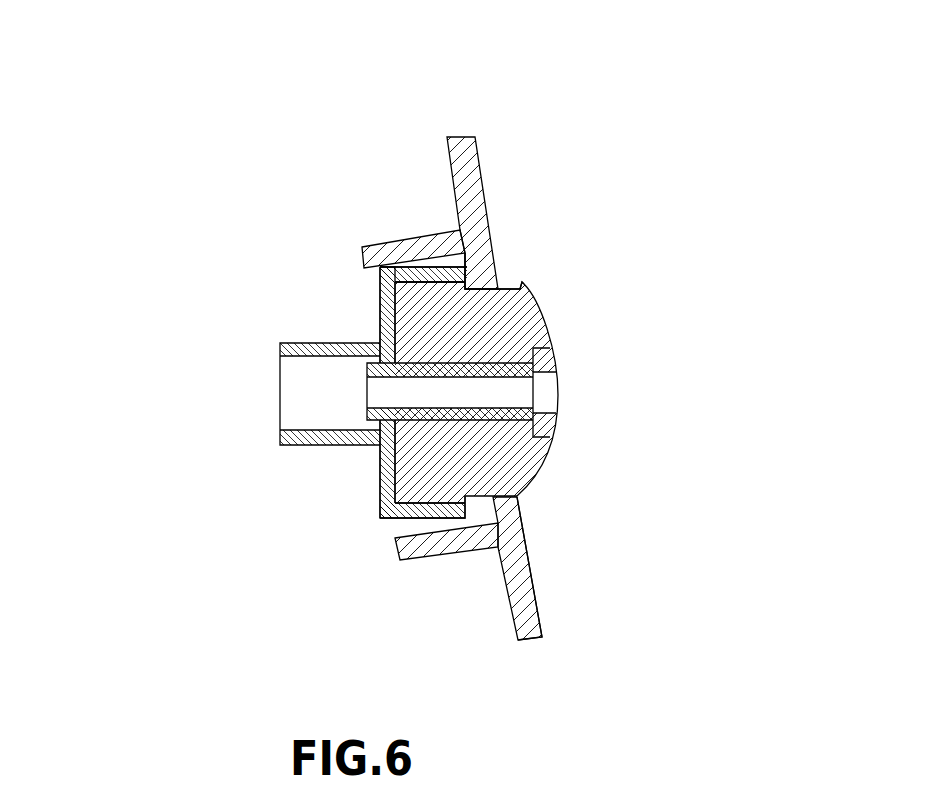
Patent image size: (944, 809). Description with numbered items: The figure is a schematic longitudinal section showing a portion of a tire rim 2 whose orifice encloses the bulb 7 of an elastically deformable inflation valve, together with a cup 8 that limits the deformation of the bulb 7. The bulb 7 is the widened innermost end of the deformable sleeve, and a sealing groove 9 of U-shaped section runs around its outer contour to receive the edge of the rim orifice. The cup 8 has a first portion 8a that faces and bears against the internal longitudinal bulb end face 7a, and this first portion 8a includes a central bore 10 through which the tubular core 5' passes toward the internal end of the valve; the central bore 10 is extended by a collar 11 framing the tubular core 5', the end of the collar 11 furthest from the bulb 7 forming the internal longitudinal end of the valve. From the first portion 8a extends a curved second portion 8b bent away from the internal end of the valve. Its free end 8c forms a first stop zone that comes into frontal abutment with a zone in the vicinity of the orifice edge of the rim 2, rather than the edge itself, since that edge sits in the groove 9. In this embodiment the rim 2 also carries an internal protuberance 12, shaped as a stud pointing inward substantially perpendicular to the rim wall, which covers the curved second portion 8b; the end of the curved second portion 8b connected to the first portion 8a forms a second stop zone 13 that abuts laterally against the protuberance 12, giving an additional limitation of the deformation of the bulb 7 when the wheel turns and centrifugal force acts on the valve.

The tire rim 2 is at (465, 250).
The tubular core 5' is at (552, 561).
The bulb 7 is at (528, 340).
The internal longitudinal bulb end face 7a is at (392, 263).
The cup 8 is at (312, 330).
The first portion 8a is at (392, 470).
The curved second portion 8b is at (417, 503).
The free end 8c is at (466, 289).
The sealing groove 9 is at (523, 287).
The central bore 10 is at (377, 427).
The collar 11 is at (310, 348).
The internal protuberance 12 is at (418, 233).
The second stop zone 13 is at (388, 267).